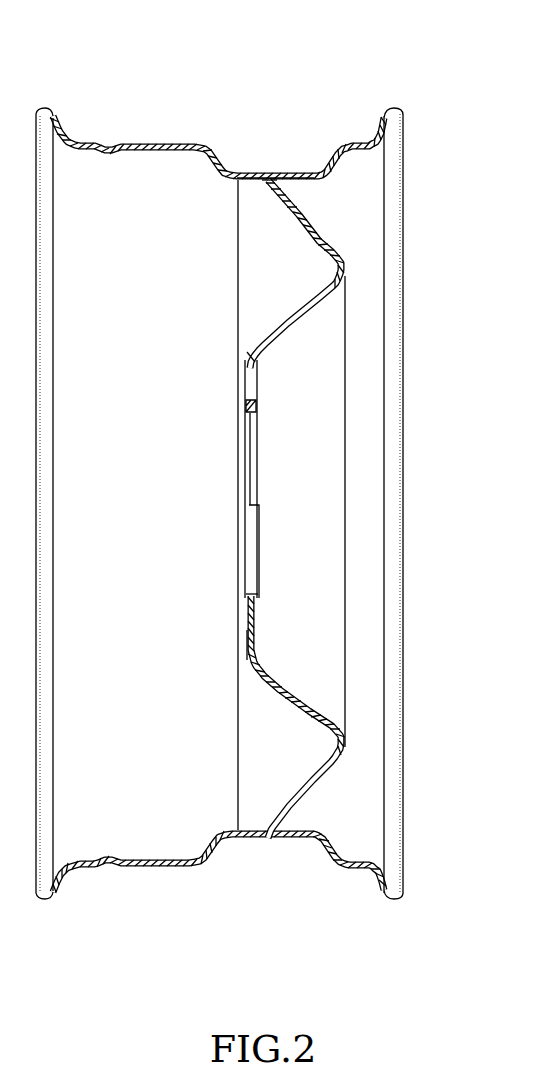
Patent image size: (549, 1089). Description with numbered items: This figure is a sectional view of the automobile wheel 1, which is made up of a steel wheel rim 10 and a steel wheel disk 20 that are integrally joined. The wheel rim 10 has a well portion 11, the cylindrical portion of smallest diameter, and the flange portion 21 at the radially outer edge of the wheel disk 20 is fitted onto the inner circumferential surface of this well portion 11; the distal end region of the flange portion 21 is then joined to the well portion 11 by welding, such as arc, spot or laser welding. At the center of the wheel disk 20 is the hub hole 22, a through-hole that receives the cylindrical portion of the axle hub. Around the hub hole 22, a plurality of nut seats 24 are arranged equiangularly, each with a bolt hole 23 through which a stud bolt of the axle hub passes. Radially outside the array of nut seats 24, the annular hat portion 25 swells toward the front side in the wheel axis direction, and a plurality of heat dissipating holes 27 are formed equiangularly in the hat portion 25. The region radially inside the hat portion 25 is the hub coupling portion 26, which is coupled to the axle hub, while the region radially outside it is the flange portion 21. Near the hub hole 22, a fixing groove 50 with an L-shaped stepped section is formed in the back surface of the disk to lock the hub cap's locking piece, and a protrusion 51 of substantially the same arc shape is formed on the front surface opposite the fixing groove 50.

The automobile wheel 1 is at (487, 45).
The wheel rim 10 is at (405, 151).
The well portion 11 is at (250, 172).
The wheel disk 20 is at (309, 509).
The flange portion 21 is at (247, 183).
The hub hole 22 is at (253, 458).
The bolt hole 23 is at (257, 393).
The nut seat 24 is at (254, 357).
The hat portion 25 is at (341, 252).
The hub coupling portion 26 is at (245, 632).
The heat dissipating hole 27 is at (306, 210).
The fixing groove 50 is at (247, 597).
The protrusion 51 is at (260, 595).